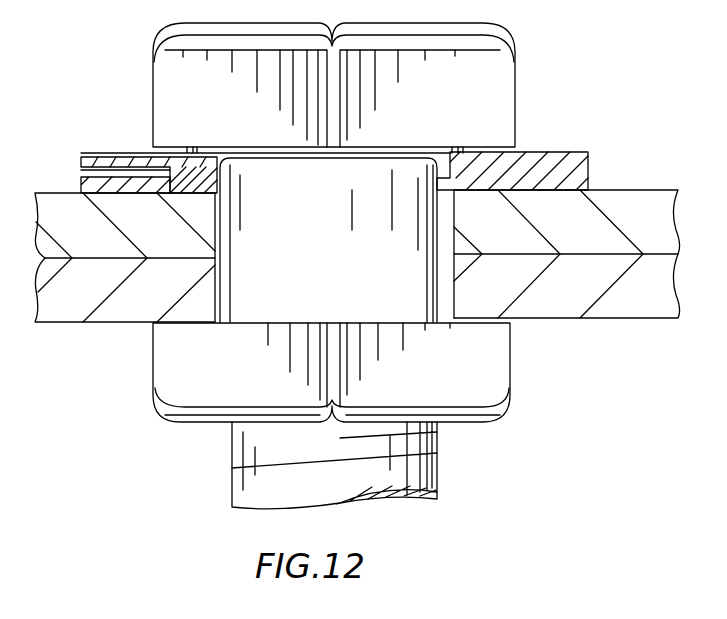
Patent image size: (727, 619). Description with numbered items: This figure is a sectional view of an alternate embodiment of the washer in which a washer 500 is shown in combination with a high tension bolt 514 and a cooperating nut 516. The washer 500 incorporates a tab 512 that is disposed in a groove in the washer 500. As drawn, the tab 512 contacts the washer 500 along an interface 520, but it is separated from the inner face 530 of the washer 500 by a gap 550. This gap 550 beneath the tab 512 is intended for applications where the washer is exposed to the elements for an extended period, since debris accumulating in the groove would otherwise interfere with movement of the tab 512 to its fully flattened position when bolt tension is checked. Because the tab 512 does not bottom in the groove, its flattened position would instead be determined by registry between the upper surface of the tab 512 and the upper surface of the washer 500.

The washer 500 is at (591, 168).
The high tension bolt 514 is at (537, 81).
The tab 512 is at (80, 161).
The inner face 530 is at (128, 176).
The gap 550 is at (106, 175).
The interface 520 is at (195, 165).
The nut 516 is at (515, 363).